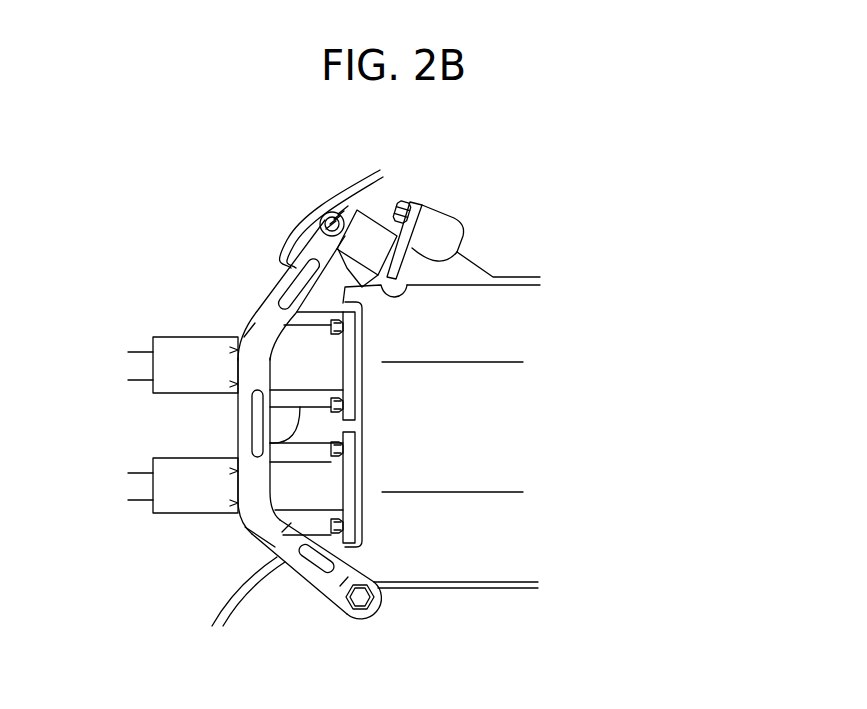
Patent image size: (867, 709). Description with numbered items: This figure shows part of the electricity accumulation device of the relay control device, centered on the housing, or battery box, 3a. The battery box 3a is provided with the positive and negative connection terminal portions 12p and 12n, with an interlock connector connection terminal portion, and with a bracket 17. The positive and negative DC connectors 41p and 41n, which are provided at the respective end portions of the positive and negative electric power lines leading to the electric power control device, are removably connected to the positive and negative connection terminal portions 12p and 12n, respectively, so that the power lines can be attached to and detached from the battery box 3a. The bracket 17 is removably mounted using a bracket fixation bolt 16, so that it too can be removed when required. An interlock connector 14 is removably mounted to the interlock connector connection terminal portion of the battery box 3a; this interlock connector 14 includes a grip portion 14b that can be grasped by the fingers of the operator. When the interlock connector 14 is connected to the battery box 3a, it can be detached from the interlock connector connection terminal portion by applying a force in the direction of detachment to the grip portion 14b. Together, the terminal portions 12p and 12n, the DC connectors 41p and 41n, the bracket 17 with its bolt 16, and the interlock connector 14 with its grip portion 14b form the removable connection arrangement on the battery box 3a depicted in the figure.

The housing (battery box) 3a is at (500, 537).
The interlock connector 14 is at (375, 231).
The grip portion 14b is at (338, 212).
The bracket fixation bolt 16 is at (320, 230).
The negative connection terminal portion 12n is at (308, 364).
The positive connection terminal portion 12p is at (305, 490).
The bracket 17 is at (257, 475).
The negative DC connector 41n is at (178, 352).
The positive DC connector 41p is at (190, 500).